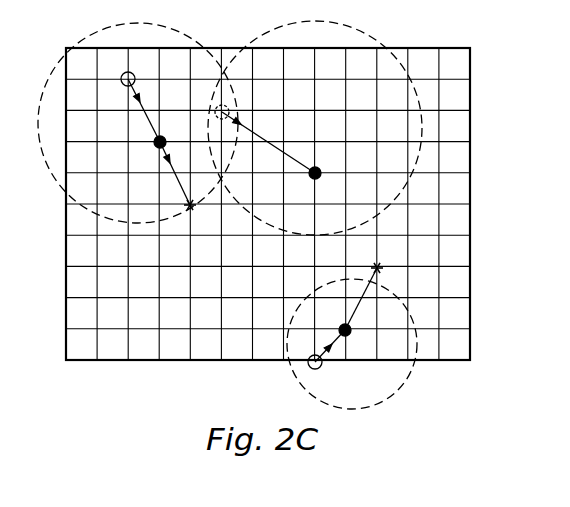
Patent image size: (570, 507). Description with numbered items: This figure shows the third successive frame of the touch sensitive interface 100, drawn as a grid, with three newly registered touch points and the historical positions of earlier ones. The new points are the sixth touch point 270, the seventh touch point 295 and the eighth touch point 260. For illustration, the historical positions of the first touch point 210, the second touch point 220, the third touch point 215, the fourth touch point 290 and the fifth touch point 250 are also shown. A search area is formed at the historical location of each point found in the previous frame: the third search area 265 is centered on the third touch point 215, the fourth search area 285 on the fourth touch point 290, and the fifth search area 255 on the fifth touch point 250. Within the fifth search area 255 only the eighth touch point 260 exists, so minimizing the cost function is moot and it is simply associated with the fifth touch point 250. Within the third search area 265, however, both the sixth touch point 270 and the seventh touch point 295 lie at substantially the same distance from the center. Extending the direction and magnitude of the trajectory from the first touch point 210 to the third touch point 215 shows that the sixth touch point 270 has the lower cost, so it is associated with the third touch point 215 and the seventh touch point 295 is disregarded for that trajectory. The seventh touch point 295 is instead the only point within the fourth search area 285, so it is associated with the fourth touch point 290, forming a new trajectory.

The touch sensitive interface 100 is at (470, 57).
The third search area 265 is at (100, 31).
The fourth search area 285 is at (362, 34).
The fifth search area 255 is at (406, 382).
The sixth touch point 270 is at (122, 84).
The third touch point 215 is at (155, 146).
The first touch point 210 is at (193, 208).
The seventh touch point 295 is at (228, 109).
The fourth touch point 290 is at (311, 178).
The eighth touch point 260 is at (319, 368).
The fifth touch point 250 is at (349, 334).
The second touch point 220 is at (380, 266).